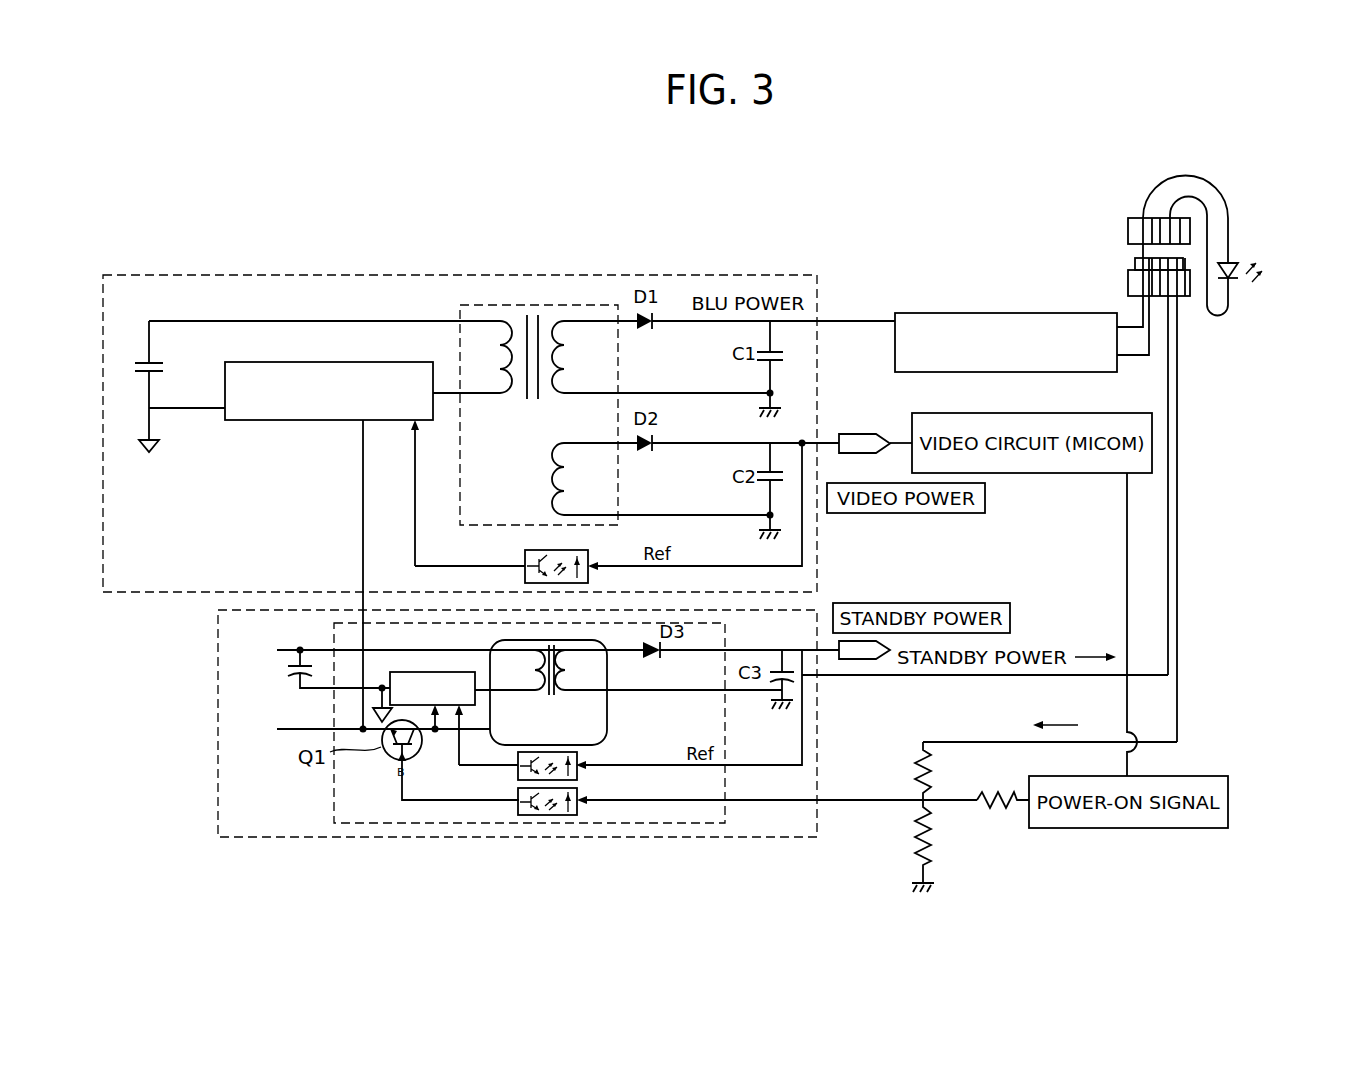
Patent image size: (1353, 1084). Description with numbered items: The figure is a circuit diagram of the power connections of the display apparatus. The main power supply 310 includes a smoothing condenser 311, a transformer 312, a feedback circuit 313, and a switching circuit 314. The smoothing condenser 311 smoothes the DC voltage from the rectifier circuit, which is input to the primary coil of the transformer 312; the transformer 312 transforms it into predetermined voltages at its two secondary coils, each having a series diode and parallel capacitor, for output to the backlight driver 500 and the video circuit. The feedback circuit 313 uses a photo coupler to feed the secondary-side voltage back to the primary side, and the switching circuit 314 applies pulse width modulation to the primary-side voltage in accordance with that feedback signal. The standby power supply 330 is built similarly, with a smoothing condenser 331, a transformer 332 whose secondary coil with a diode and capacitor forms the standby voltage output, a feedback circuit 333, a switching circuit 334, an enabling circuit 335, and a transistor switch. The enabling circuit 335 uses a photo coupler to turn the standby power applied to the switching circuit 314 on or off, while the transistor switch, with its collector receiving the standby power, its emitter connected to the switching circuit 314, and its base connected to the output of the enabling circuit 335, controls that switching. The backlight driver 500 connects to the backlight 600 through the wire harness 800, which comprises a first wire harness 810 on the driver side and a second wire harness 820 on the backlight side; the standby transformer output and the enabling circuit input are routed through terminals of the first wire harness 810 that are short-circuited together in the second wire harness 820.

The main power supply 310 is at (376, 275).
The smoothing condenser 311 is at (148, 358).
The transformer 312 is at (548, 305).
The feedback circuit 313 is at (525, 553).
The switching circuit 314 is at (310, 421).
The standby power supply 330 is at (218, 725).
The smoothing condenser 331 is at (290, 673).
The transformer 332 is at (612, 712).
The feedback circuit 333 is at (580, 752).
The switching circuit 334 is at (450, 672).
The enabling circuit 335 is at (548, 815).
The backlight driver 500 is at (913, 313).
The backlight 600 is at (1268, 271).
The wire harness 800 is at (1087, 257).
The first wire harness 810 is at (1128, 278).
The second wire harness 820 is at (1128, 232).